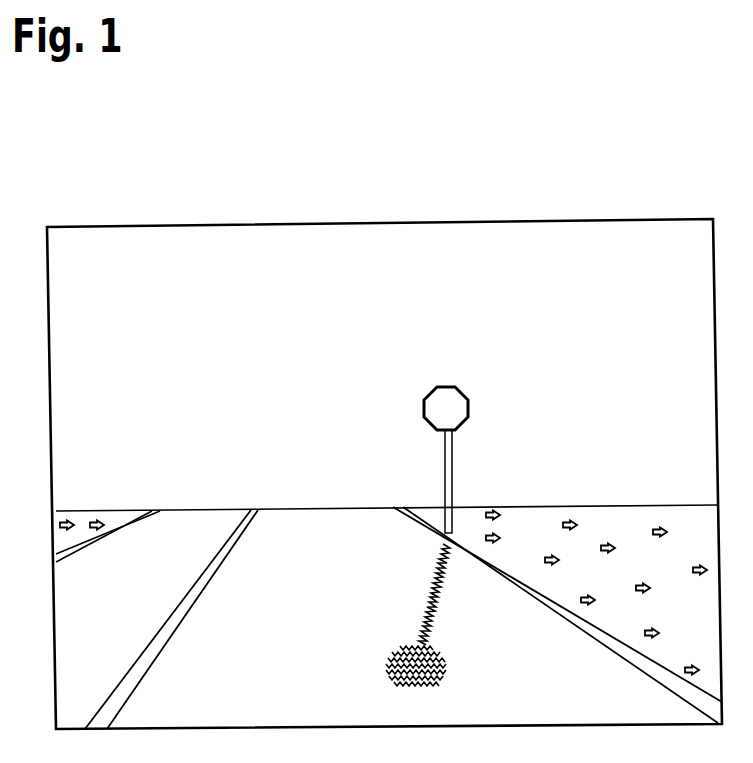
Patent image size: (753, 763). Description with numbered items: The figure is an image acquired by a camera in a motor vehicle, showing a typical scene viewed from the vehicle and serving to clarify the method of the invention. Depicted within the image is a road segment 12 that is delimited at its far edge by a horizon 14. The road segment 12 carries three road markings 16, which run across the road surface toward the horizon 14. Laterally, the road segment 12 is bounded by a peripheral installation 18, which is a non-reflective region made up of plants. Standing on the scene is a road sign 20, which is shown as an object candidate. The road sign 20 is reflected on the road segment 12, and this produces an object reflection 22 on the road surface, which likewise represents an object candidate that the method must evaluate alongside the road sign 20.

The road segment 12 is at (384, 474).
The horizon 14 is at (387, 470).
The road markings 16 is at (389, 618).
The peripheral installation 18 is at (383, 529).
The road sign 20 is at (486, 460).
The object reflection 22 is at (456, 616).